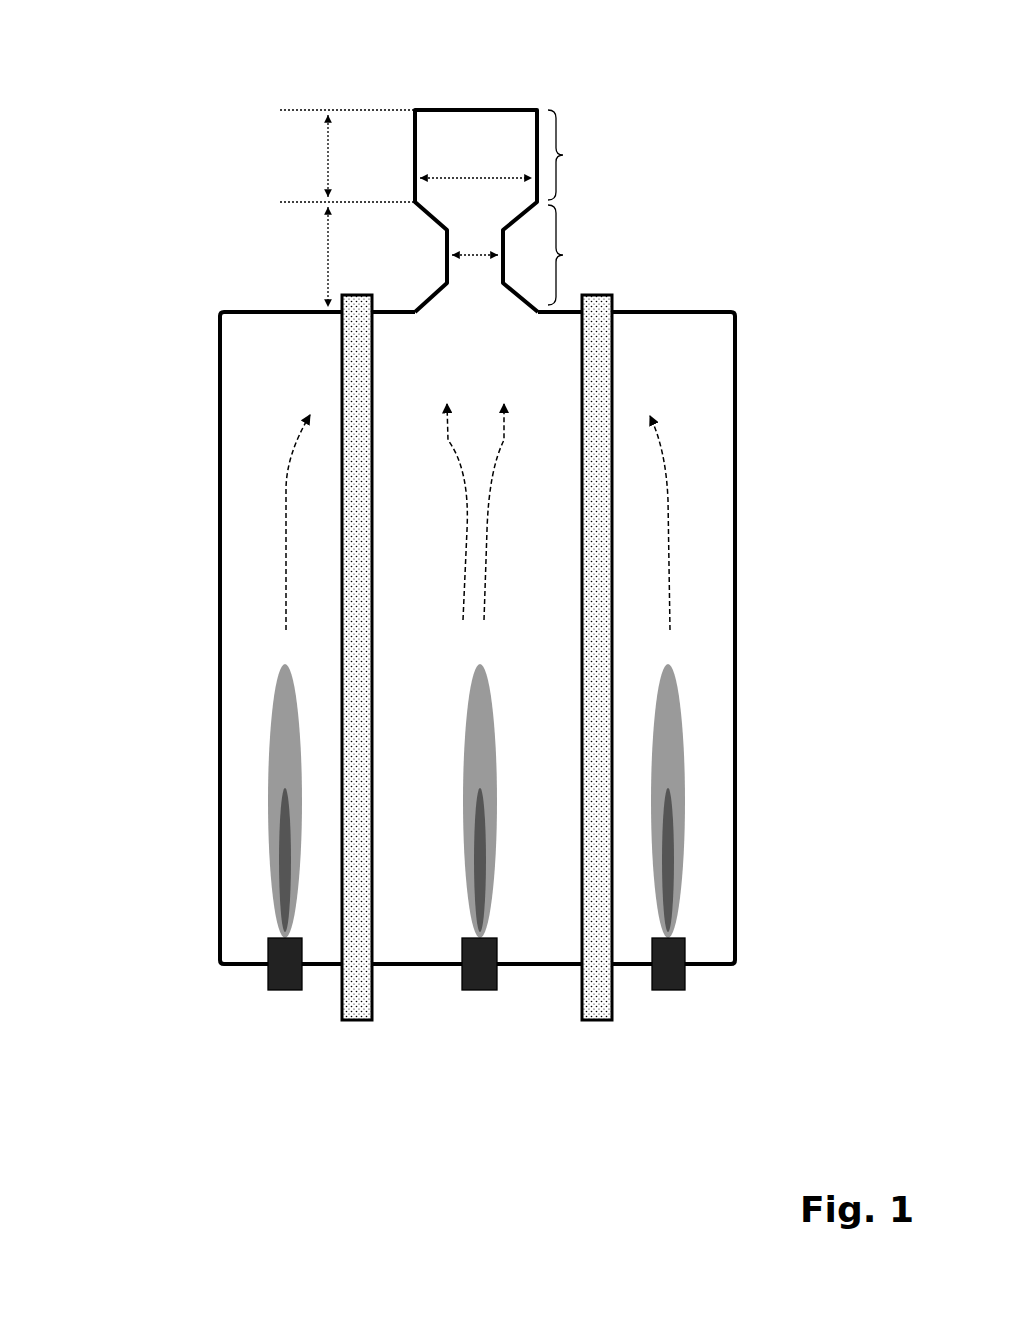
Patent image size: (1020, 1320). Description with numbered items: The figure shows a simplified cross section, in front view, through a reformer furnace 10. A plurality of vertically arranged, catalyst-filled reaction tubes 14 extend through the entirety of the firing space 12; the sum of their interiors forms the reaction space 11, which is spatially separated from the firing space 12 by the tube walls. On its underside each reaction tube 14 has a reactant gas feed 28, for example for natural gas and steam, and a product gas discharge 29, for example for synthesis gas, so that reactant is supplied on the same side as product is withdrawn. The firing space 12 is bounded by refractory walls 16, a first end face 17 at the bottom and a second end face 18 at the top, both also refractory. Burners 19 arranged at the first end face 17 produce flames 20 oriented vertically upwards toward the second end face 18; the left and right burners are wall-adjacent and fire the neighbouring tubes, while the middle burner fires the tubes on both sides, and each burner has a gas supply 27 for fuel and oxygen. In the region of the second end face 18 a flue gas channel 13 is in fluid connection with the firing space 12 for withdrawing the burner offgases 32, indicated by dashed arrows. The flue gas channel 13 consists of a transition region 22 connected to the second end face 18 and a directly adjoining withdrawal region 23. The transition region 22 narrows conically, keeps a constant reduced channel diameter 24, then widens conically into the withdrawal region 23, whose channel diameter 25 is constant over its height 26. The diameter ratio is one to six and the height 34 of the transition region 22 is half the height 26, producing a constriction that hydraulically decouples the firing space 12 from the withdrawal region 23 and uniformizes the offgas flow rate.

The reformer furnace 10 is at (138, 143).
The reaction space 11 is at (353, 405).
The firing space 12 is at (242, 393).
The flue gas channel 13 is at (415, 158).
The reaction tube 14 is at (343, 433).
The refractory wall 16 is at (219, 652).
The first end face 17 is at (710, 968).
The second end face 18 is at (690, 312).
The burner 19 is at (268, 977).
The flame 20 is at (278, 790).
The transition region 22 is at (583, 255).
The withdrawal region 23 is at (583, 155).
The channel diameter of the transition region 24 is at (482, 253).
The channel diameter of the withdrawal region 25 is at (475, 178).
The height of the withdrawal region 26 is at (326, 160).
The gas supply 27 is at (285, 995).
The reactant gas feed 28 is at (365, 1028).
The product gas discharge 29 is at (348, 1022).
The burner offgases 32 is at (288, 452).
The height of the transition region 34 is at (326, 255).